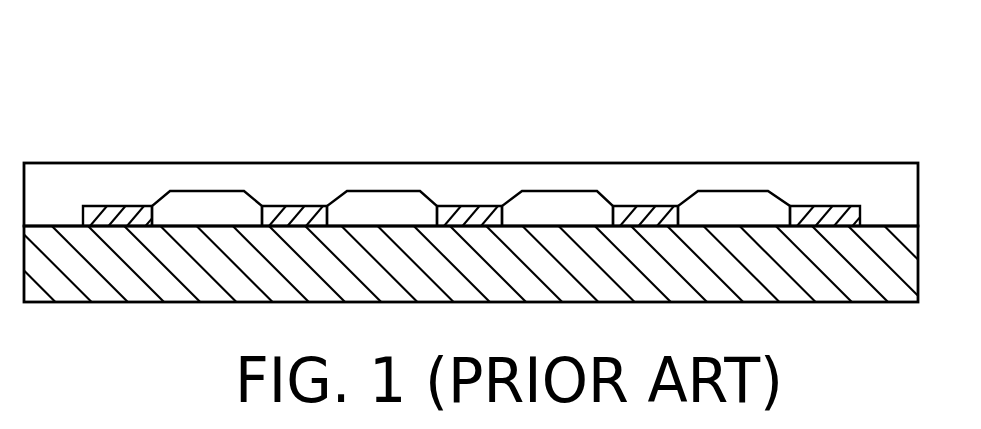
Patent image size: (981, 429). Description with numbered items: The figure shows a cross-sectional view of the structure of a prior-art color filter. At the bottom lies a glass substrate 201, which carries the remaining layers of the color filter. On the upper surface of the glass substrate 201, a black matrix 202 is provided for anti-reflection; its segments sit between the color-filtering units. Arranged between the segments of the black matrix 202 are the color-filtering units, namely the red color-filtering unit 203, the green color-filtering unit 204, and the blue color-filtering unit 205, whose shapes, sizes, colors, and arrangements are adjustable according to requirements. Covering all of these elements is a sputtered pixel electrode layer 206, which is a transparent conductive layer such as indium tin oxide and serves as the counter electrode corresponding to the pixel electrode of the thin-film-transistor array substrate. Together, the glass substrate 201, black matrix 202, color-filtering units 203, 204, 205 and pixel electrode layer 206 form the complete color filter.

The glass substrate 201 is at (885, 243).
The black matrix 202 is at (819, 205).
The red color-filtering unit 203 is at (735, 200).
The green color-filtering unit 204 is at (558, 202).
The blue color-filtering unit 205 is at (383, 205).
The pixel electrode layer 206 is at (68, 195).